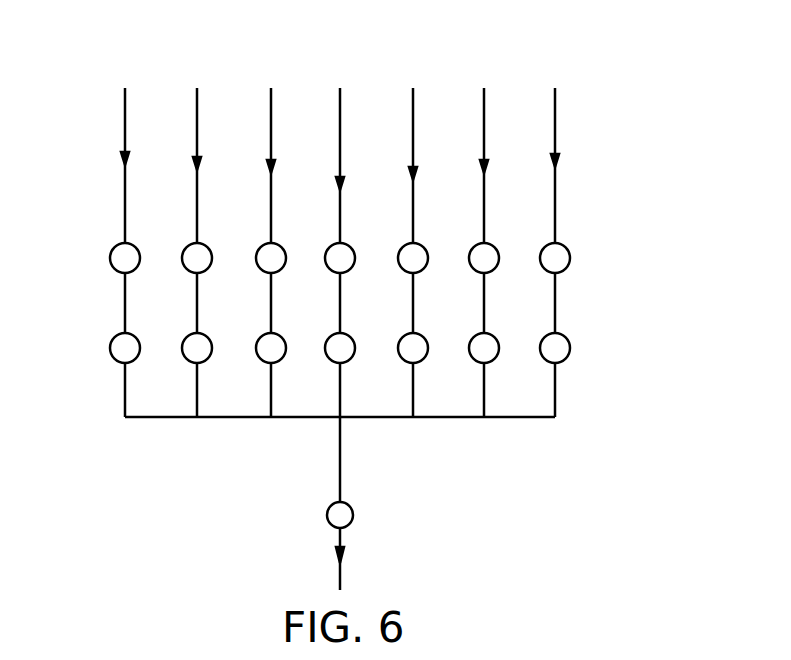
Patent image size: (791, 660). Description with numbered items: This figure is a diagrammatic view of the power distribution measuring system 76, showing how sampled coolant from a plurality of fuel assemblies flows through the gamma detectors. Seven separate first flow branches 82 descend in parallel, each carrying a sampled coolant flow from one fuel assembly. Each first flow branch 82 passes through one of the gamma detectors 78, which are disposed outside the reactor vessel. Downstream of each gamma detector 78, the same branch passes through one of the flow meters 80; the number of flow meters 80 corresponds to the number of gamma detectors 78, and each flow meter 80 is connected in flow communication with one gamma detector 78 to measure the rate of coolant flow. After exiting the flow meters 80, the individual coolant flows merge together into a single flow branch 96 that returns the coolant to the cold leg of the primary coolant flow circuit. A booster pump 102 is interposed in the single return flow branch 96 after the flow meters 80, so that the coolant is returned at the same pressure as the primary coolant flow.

The power distribution measuring system 76 is at (581, 65).
The first plurality of separate flow branches 82 is at (271, 155).
The gamma detectors 78 is at (340, 243).
The flow meters 80 is at (271, 333).
The single flow branch 96 is at (340, 470).
The booster pump 102 is at (353, 515).